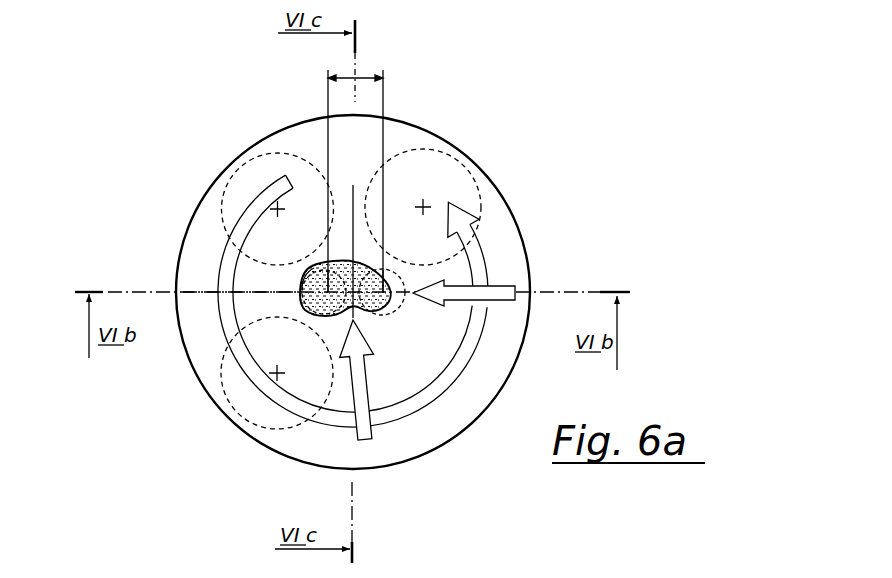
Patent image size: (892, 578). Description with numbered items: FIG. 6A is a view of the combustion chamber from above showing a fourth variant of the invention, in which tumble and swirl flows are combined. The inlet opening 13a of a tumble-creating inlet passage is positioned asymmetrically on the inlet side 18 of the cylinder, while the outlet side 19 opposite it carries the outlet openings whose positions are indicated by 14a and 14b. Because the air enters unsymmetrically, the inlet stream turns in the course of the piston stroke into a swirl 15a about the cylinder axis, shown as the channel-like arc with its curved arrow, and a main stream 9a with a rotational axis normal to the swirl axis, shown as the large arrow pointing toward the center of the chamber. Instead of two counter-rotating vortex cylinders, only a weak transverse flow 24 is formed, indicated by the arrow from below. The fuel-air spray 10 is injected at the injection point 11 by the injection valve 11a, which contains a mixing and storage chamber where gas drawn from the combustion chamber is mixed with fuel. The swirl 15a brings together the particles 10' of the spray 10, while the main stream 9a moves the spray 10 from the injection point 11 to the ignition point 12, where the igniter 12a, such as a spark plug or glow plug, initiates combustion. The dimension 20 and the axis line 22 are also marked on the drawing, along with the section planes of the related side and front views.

The main stream 9a is at (447, 290).
The fuel-air spray 10 is at (351, 314).
The particles of the fuel-air spray 10' is at (279, 278).
The injection point 11 is at (388, 298).
The injection valve 11a is at (392, 263).
The ignition point 12 is at (330, 285).
The igniter 12a is at (313, 273).
The inlet opening 13a is at (442, 160).
The outlet opening position 14a is at (258, 177).
The outlet opening position 14b is at (240, 393).
The swirl 15a is at (418, 413).
The inlet side 18 is at (395, 128).
The outlet side 19 is at (312, 130).
The bore width 20 is at (360, 76).
The axis 22 is at (195, 288).
The transverse flow 24 is at (368, 389).